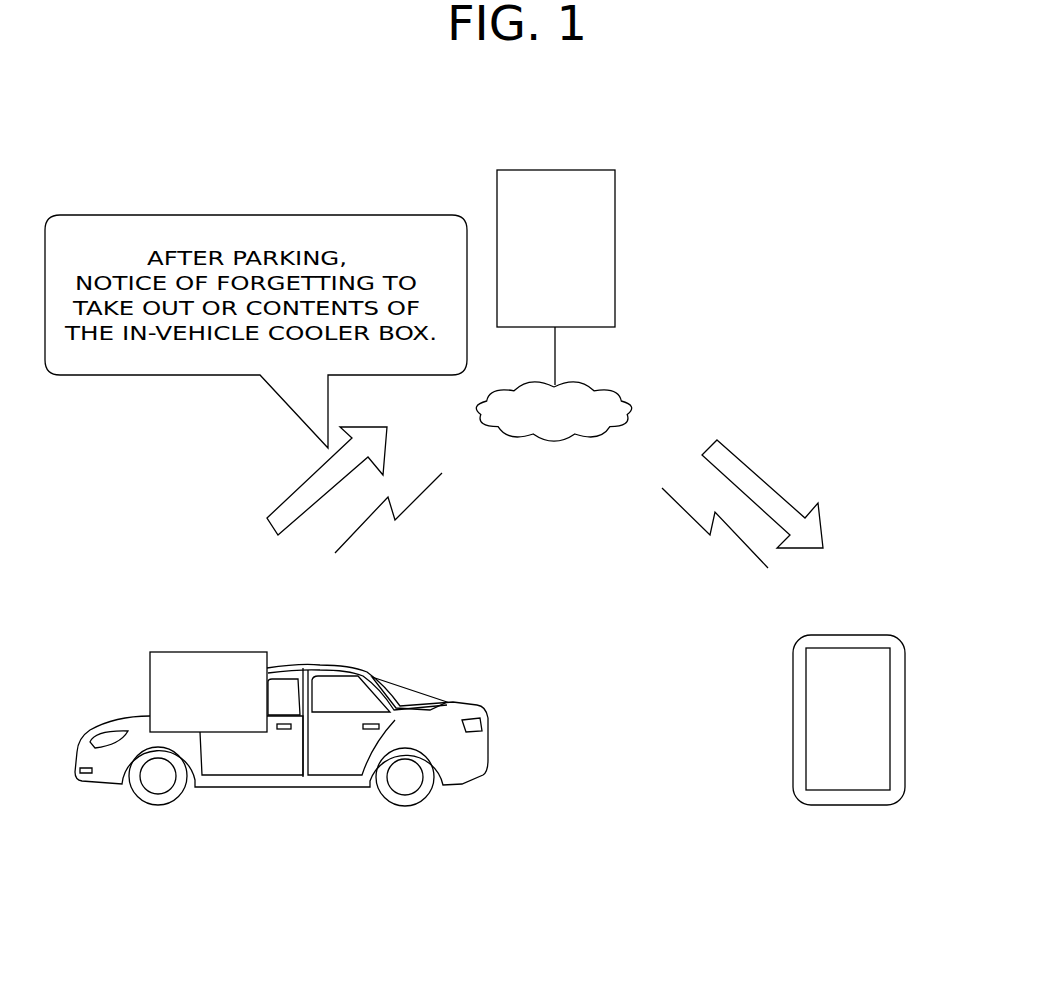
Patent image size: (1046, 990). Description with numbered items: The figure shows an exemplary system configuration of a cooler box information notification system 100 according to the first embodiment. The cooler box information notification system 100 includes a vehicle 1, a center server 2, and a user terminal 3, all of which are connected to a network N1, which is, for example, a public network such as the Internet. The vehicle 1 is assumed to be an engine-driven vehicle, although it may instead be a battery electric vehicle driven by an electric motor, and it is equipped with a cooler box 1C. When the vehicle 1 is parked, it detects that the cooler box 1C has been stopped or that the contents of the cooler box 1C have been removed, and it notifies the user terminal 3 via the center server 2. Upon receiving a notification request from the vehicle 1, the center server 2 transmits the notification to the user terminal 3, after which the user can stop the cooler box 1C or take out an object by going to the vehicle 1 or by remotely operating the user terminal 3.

The cooler box information notification system 100 is at (806, 166).
The vehicle 1 is at (412, 682).
The cooler box 1C is at (200, 652).
The center server 2 is at (616, 210).
The network N1 is at (608, 392).
The user terminal 3 is at (905, 653).